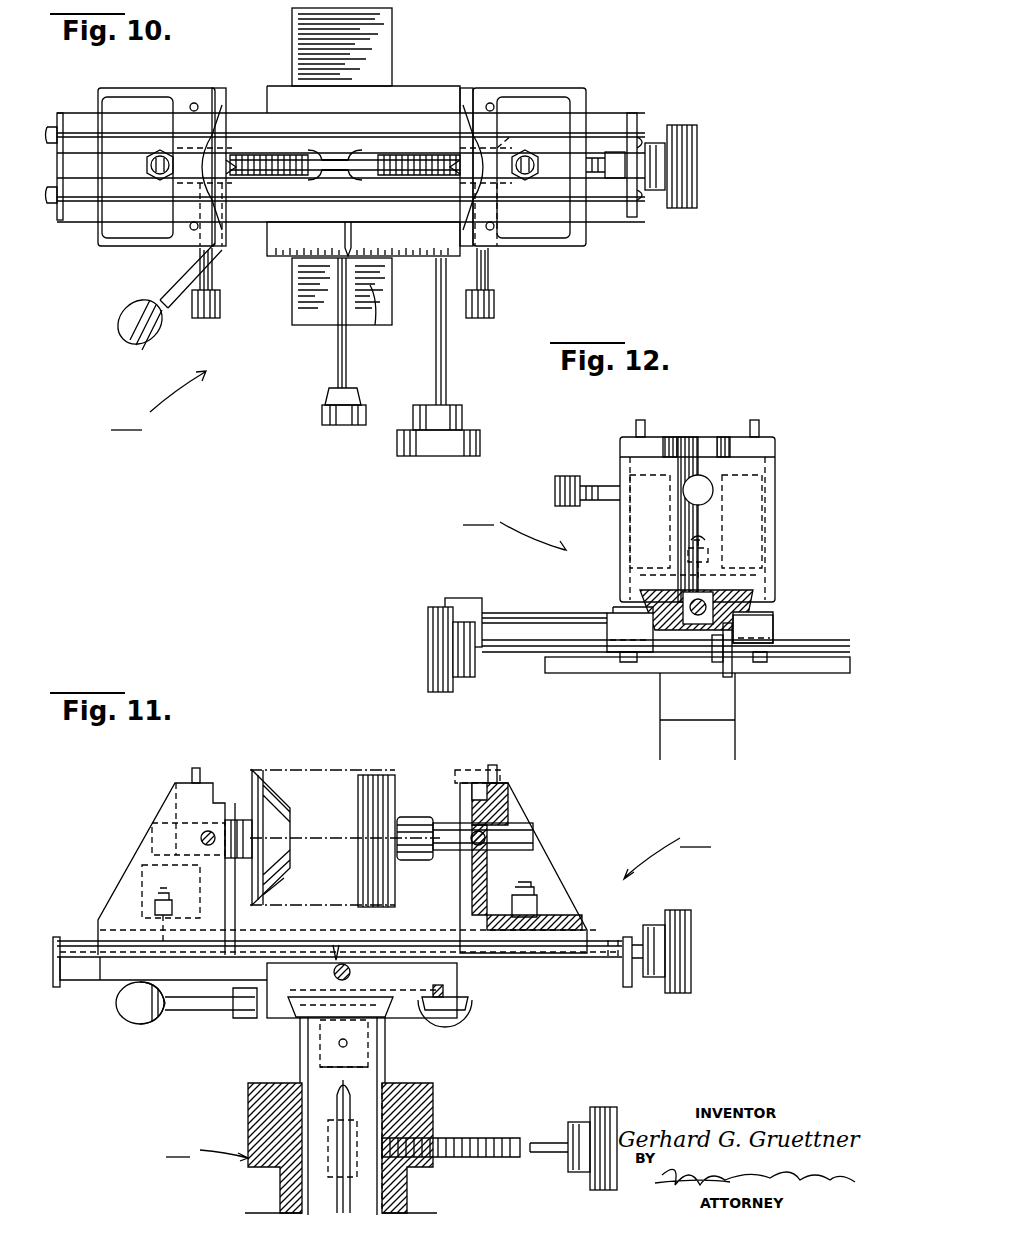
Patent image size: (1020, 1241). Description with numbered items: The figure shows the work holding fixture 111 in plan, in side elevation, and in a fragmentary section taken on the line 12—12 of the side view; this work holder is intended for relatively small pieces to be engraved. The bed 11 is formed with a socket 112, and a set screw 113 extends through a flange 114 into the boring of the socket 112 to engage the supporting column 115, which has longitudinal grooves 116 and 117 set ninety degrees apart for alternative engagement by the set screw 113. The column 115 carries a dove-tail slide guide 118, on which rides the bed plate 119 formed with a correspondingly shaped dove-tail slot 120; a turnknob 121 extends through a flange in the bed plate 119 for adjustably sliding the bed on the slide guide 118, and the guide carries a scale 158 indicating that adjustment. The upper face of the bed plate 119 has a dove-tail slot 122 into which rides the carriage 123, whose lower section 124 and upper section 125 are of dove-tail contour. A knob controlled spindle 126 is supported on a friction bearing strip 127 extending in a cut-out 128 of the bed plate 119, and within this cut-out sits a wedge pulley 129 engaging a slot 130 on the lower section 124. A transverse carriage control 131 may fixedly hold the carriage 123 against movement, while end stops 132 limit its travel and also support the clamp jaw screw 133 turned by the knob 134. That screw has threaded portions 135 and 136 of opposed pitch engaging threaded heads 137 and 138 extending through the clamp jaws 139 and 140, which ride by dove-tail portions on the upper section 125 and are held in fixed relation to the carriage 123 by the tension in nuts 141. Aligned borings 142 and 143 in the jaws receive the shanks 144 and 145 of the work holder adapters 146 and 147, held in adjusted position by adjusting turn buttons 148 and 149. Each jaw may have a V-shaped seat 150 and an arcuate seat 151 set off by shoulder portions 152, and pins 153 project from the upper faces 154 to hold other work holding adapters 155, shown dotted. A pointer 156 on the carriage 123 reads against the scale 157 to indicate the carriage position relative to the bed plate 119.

In FIG. 11, the bed 11 is at (207, 1147).
In FIG. 11, the section line 12— 12 is at (296, 1075).
In FIG. 10, the work holding fixture 111 is at (158, 401).
In FIG. 12, the work holding fixture 111 is at (514, 526).
In FIG. 11, the work holding fixture 111 is at (670, 851).
In FIG. 11, the socket 112 is at (282, 1193).
In FIG. 11, the set screw 113 is at (530, 1165).
In FIG. 11, the flange 114 is at (400, 1193).
In FIG. 12, the supporting column 115 is at (725, 733).
In FIG. 11, the supporting column 115 is at (315, 1138).
In FIG. 11, the longitudinal groove 116 is at (337, 1106).
In FIG. 11, the longitudinal groove 117 is at (390, 1105).
In FIG. 10, the slide guide 118 is at (298, 297).
In FIG. 12, the slide guide 118 is at (556, 673).
In FIG. 11, the slide guide 118 is at (310, 1003).
In FIG. 10, the bed plate 119 is at (272, 240).
In FIG. 12, the bed plate 119 is at (605, 618).
In FIG. 11, the bed plate 119 is at (375, 960).
In FIG. 11, the dove-tail slot 120 is at (290, 1005).
In FIG. 10, the turnknob 121 is at (175, 282).
In FIG. 11, the turnknob 121 is at (178, 1012).
In FIG. 12, the dove-tail slot 122 is at (773, 618).
In FIG. 10, the carriage 123 is at (72, 113).
In FIG. 12, the carriage 123 is at (718, 590).
In FIG. 11, the carriage 123 is at (304, 935).
In FIG. 12, the lower section 124 is at (760, 612).
In FIG. 11, the lower section 124 is at (95, 982).
In FIG. 10, the upper section 125 is at (408, 113).
In FIG. 12, the upper section 125 is at (752, 598).
In FIG. 11, the upper section 125 is at (88, 940).
In FIG. 10, the knob controlled spindle 126 is at (446, 370).
In FIG. 12, the knob controlled spindle 126 is at (498, 655).
In FIG. 11, the knob controlled spindle 126 is at (433, 990).
In FIG. 12, the friction bearing strip 127 is at (622, 664).
In FIG. 11, the friction bearing strip 127 is at (466, 1000).
In FIG. 12, the cut-out 128 is at (670, 665).
In FIG. 12, the wedge pulley 129 is at (732, 665).
In FIG. 11, the wedge pulley 129 is at (462, 1018).
In FIG. 12, the slot 130 is at (775, 627).
In FIG. 10, the transverse carriage control 131 is at (338, 365).
In FIG. 12, the transverse carriage control 131 is at (505, 613).
In FIG. 11, the transverse carriage control 131 is at (348, 965).
In FIG. 10, the end stop 132 is at (60, 210).
In FIG. 11, the end stop 132 is at (56, 988).
In FIG. 10, the clamp jaw screw 133 is at (613, 152).
In FIG. 12, the clamp jaw screw 133 is at (670, 600).
In FIG. 11, the clamp jaw screw 133 is at (614, 940).
In FIG. 10, the knob 134 is at (688, 140).
In FIG. 11, the knob 134 is at (685, 935).
In FIG. 10, the threaded portion 135 is at (272, 150).
In FIG. 10, the threaded portion 136 is at (392, 155).
In FIG. 10, the threaded head 137 is at (148, 165).
In FIG. 12, the threaded head 137 is at (680, 580).
In FIG. 11, the threaded head 137 is at (150, 940).
In FIG. 10, the threaded head 138 is at (536, 160).
In FIG. 11, the threaded head 138 is at (538, 900).
In FIG. 10, the clamp jaw 139 is at (138, 88).
In FIG. 12, the clamp jaw 139 is at (620, 524).
In FIG. 11, the clamp jaw 139 is at (140, 855).
In FIG. 10, the clamp jaw 140 is at (568, 88).
In FIG. 11, the clamp jaw 140 is at (548, 865).
In FIG. 10, the nut 141 is at (148, 172).
In FIG. 12, the nut 141 is at (712, 545).
In FIG. 11, the nut 141 is at (150, 905).
In FIG. 10, the boring 142 is at (180, 148).
In FIG. 12, the boring 142 is at (713, 490).
In FIG. 11, the boring 142 is at (178, 865).
In FIG. 10, the boring 143 is at (512, 135).
In FIG. 11, the boring 143 is at (510, 820).
In FIG. 11, the shank 144 is at (238, 820).
In FIG. 11, the shank 145 is at (433, 860).
In FIG. 11, the work holder adapter 146 is at (278, 810).
In FIG. 11, the work holder adapter 147 is at (358, 875).
In FIG. 10, the adjusting turn button 148 is at (200, 318).
In FIG. 12, the adjusting turn button 148 is at (592, 486).
In FIG. 11, the adjusting turn button 148 is at (206, 832).
In FIG. 10, the adjusting turn button 149 is at (482, 312).
In FIG. 11, the adjusting turn button 149 is at (480, 845).
In FIG. 10, the V-shaped seat 150 is at (208, 160).
In FIG. 12, the V-shaped seat 150 is at (682, 515).
In FIG. 11, the V-shaped seat 150 is at (462, 890).
In FIG. 10, the arcuate-shaped seat 151 is at (190, 183).
In FIG. 12, the arcuate-shaped seat 151 is at (680, 445).
In FIG. 11, the arcuate-shaped seat 151 is at (472, 790).
In FIG. 10, the shoulder portion 152 is at (220, 115).
In FIG. 12, the shoulder portion 152 is at (760, 450).
In FIG. 11, the shoulder portion 152 is at (220, 803).
In FIG. 10, the pin 153 is at (194, 103).
In FIG. 12, the pin 153 is at (636, 428).
In FIG. 11, the pin 153 is at (196, 768).
In FIG. 10, the upper face 154 is at (205, 95).
In FIG. 12, the upper face 154 is at (737, 437).
In FIG. 11, the upper face 154 is at (182, 783).
In FIG. 11, the work holding adapter 155 is at (458, 770).
In FIG. 10, the pointer 156 is at (350, 230).
In FIG. 12, the pointer 156 is at (612, 605).
In FIG. 11, the pointer 156 is at (335, 945).
In FIG. 10, the scale 157 is at (412, 256).
In FIG. 10, the scale 158 is at (375, 325).